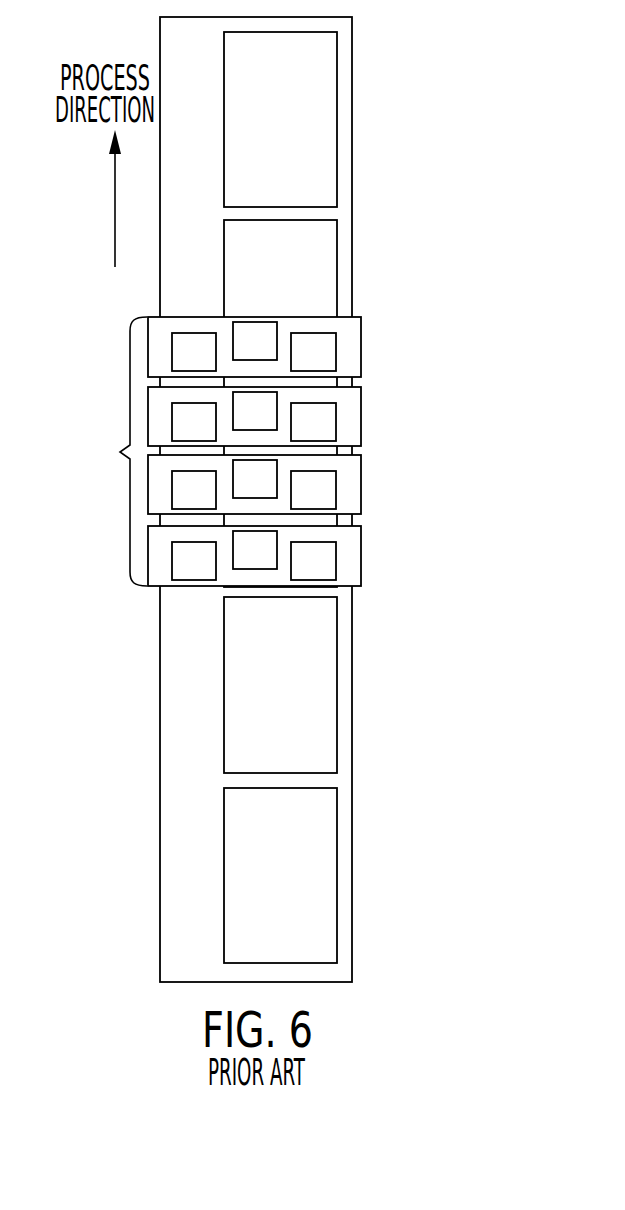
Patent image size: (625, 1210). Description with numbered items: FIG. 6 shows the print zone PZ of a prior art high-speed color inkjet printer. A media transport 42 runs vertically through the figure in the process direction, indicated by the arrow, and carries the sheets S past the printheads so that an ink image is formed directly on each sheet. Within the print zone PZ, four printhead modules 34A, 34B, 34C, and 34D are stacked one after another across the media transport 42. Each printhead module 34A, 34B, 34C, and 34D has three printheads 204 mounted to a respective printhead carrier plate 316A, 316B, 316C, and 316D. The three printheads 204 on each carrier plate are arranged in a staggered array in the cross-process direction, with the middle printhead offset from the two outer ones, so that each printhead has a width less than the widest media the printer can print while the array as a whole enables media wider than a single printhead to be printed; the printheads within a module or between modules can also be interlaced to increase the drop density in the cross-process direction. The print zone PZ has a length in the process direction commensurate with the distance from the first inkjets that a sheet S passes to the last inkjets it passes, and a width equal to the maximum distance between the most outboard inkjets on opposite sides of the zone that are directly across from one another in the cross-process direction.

The media transport 42 is at (137, 275).
The sheets S is at (338, 128).
The printhead carrier plate 316A is at (361, 537).
The printhead carrier plate 316B is at (361, 467).
The printhead carrier plate 316C is at (361, 398).
The printhead carrier plate 316D is at (361, 328).
The printhead module 34A is at (302, 550).
The printhead module 34B is at (302, 478).
The printhead module 34C is at (302, 407).
The printhead module 34D is at (302, 337).
The printheads 204 is at (328, 573).
The print zone PZ is at (119, 451).